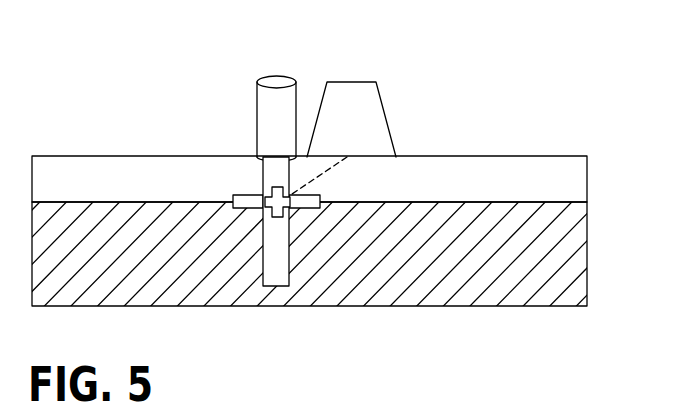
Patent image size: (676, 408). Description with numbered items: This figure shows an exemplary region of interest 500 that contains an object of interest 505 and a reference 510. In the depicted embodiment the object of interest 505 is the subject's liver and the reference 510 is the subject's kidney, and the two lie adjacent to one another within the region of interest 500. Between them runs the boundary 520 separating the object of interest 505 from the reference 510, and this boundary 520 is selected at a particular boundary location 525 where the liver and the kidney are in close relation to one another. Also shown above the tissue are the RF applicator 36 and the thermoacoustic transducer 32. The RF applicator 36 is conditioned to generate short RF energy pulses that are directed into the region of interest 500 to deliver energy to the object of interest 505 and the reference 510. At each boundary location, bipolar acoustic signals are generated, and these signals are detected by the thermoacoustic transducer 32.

The region of interest 500 is at (586, 120).
The object of interest 505 is at (200, 290).
The reference 510 is at (102, 156).
The boundary 520 is at (320, 208).
The boundary location 525 is at (268, 195).
The thermoacoustic transducer 32 is at (272, 77).
The RF applicator 36 is at (363, 83).